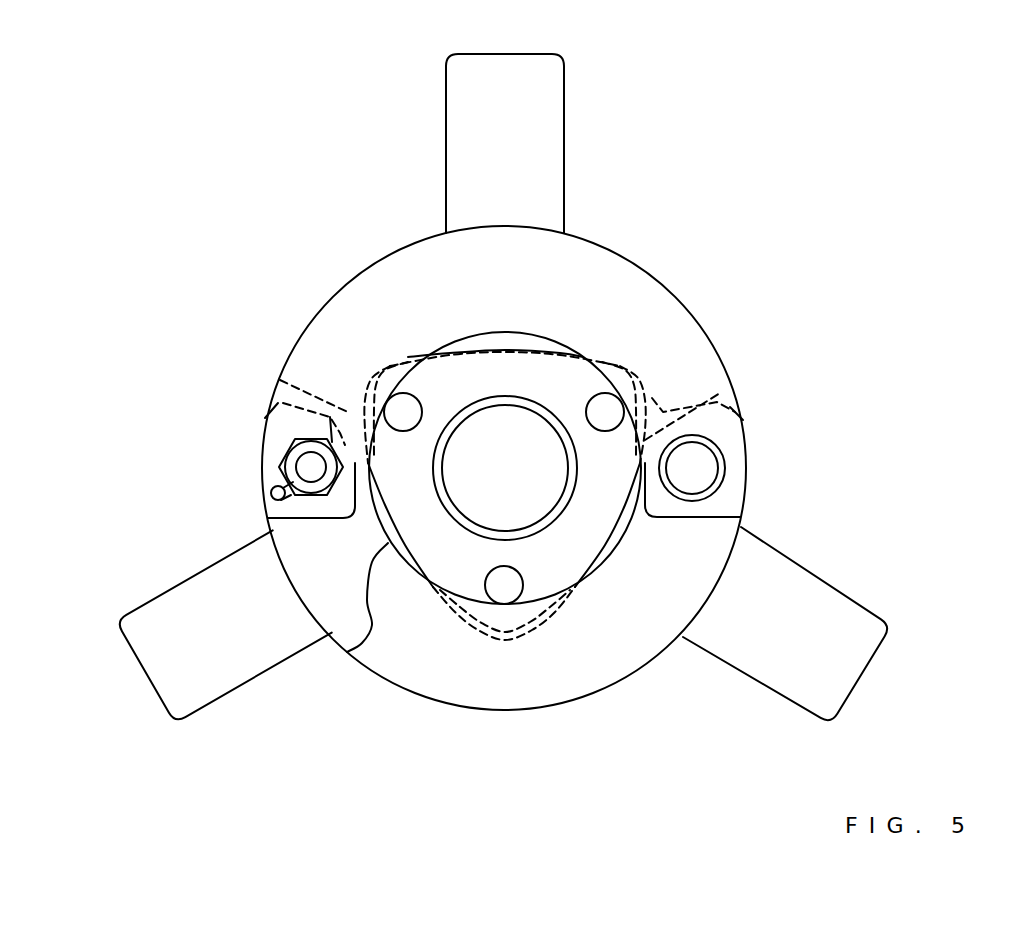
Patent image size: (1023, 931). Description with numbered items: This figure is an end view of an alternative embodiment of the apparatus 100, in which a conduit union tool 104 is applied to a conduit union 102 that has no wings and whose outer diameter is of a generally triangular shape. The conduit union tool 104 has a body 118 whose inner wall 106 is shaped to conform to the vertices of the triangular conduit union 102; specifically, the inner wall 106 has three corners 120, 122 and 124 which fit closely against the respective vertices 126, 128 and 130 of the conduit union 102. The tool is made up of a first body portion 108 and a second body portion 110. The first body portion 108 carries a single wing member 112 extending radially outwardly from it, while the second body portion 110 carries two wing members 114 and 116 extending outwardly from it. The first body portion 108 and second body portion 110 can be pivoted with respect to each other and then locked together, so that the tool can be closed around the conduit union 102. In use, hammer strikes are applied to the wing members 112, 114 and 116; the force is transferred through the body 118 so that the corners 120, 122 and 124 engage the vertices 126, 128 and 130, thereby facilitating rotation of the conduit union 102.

The apparatus 100 is at (728, 216).
The conduit union 102 is at (465, 383).
The conduit union tool 104 is at (633, 647).
The inner wall 106 is at (350, 643).
The first body portion 108 is at (610, 248).
The second body portion 110 is at (500, 712).
The wing member 112 is at (540, 108).
The wing member 114 is at (822, 652).
The wing member 116 is at (190, 668).
The body 118 is at (403, 653).
The corner 120 is at (387, 363).
The corner 122 is at (630, 373).
The corner 124 is at (487, 633).
The vertex 126 is at (362, 380).
The vertex 128 is at (643, 388).
The vertex 130 is at (540, 620).